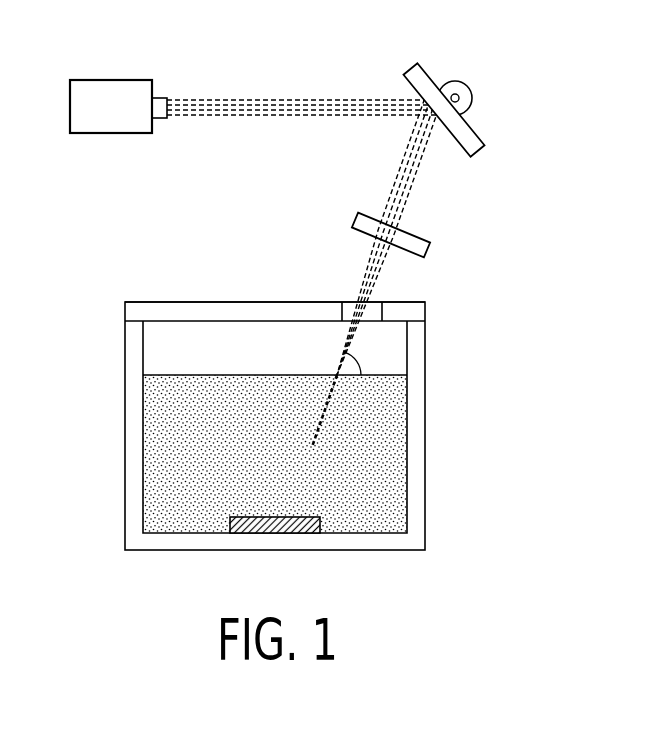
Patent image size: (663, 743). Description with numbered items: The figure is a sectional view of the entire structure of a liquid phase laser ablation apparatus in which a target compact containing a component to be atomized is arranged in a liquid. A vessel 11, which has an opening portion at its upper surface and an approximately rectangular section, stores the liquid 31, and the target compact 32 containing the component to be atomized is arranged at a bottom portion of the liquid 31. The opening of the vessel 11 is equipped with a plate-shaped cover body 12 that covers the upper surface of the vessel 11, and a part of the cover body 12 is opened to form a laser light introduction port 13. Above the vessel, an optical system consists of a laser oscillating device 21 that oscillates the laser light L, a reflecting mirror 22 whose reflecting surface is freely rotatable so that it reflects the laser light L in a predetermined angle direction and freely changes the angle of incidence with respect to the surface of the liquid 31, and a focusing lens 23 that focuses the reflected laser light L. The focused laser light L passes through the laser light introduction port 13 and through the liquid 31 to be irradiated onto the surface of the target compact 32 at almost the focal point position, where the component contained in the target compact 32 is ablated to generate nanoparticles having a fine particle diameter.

The vessel 11 is at (132, 427).
The cover body 12 is at (243, 310).
The laser light introduction port 13 is at (348, 308).
The laser oscillating device 21 is at (108, 80).
The reflecting mirror 22 is at (472, 135).
The focusing lens 23 is at (415, 232).
The liquid 31 is at (289, 493).
The target compact 32 is at (277, 535).
The laser light L is at (277, 100).